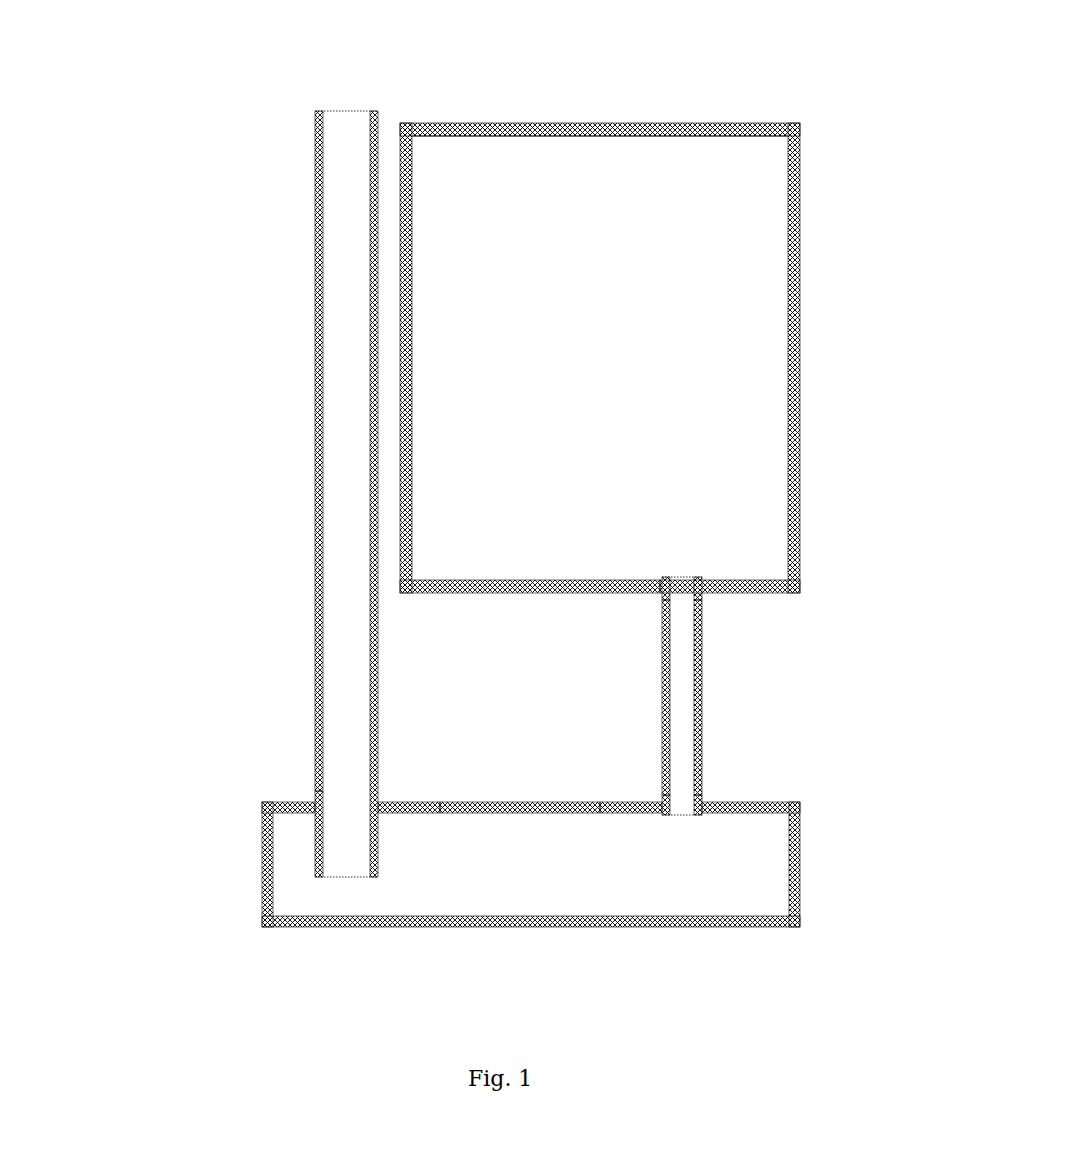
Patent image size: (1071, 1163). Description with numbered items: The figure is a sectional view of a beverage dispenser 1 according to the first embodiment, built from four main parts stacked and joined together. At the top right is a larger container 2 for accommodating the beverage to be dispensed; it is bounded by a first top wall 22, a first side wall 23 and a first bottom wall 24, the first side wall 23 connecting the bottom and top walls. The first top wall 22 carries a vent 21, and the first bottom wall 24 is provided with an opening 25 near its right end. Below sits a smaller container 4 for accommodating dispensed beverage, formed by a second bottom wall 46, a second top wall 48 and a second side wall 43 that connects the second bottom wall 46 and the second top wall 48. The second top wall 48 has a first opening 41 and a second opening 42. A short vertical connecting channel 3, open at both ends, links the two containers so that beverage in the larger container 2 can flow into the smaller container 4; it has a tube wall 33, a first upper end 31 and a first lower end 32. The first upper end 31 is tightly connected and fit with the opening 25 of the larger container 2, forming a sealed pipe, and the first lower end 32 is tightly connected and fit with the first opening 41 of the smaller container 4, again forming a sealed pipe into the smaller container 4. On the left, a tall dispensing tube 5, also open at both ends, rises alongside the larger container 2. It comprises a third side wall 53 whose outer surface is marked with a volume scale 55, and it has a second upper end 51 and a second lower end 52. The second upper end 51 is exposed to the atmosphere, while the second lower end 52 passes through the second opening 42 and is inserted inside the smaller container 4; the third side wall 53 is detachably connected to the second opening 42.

The beverage dispenser 1 is at (247, 913).
The larger container 2 is at (399, 491).
The vent 21 is at (627, 130).
The first top wall 22 is at (560, 128).
The first side wall 23 is at (412, 336).
The first bottom wall 24 is at (466, 580).
The opening 25 is at (660, 583).
The connecting channel 3 is at (683, 681).
The first upper end 31 is at (680, 573).
The first lower end 32 is at (680, 813).
The tube wall 33 is at (699, 637).
The smaller container 4 is at (797, 889).
The first opening 41 is at (662, 805).
The second opening 42 is at (378, 804).
The second side wall 43 is at (268, 882).
The second bottom wall 46 is at (453, 918).
The second top wall 48 is at (460, 805).
The dispensing tube 5 is at (308, 664).
The second upper end 51 is at (352, 111).
The second lower end 52 is at (345, 876).
The third side wall 53 is at (317, 804).
The volume scale 55 is at (313, 715).